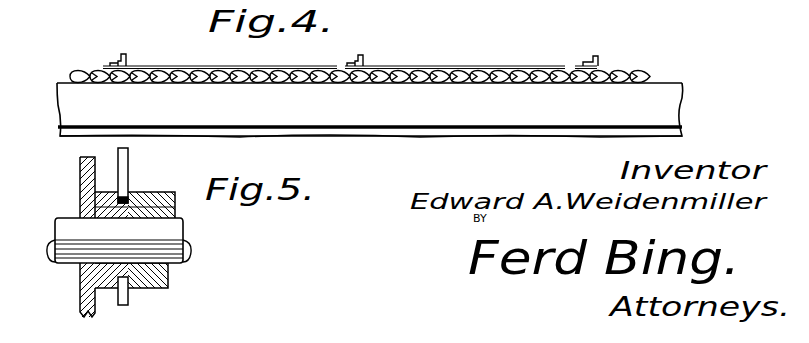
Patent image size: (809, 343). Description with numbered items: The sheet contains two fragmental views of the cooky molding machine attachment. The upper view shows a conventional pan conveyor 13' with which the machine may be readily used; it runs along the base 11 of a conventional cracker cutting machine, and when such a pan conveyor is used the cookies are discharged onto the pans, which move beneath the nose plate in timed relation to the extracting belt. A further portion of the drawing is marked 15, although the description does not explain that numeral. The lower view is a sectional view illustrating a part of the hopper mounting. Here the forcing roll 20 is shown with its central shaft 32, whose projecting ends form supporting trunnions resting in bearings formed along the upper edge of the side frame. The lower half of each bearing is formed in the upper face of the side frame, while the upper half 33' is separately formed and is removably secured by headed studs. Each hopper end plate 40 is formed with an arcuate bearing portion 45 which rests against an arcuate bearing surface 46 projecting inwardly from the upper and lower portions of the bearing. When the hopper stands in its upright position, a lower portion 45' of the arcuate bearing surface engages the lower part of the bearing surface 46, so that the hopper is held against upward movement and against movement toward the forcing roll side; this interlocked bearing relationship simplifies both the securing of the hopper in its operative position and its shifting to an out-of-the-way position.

In FIG. 4, the base 11 is at (664, 94).
In FIG. 4, the pan conveyor 13' is at (360, 55).
In FIG. 4, the board portion 15 is at (398, 158).
In FIG. 5, the forcing roll 20 is at (80, 172).
In FIG. 5, the central shaft 32 is at (182, 242).
In FIG. 5, the upper half of bearing 33' is at (157, 223).
In FIG. 5, the end plate 40 is at (128, 156).
In FIG. 5, the arcuate bearing portion 45 is at (143, 224).
In FIG. 5, the lower portion of arcuate bearing surface 45' is at (102, 263).
In FIG. 5, the arcuate bearing surface 46 is at (118, 208).